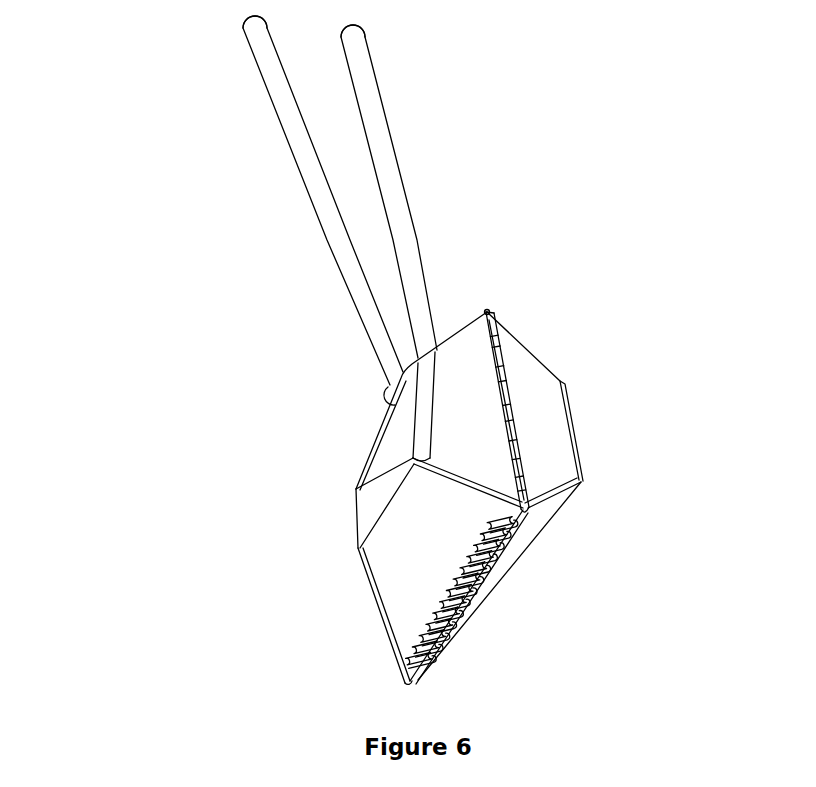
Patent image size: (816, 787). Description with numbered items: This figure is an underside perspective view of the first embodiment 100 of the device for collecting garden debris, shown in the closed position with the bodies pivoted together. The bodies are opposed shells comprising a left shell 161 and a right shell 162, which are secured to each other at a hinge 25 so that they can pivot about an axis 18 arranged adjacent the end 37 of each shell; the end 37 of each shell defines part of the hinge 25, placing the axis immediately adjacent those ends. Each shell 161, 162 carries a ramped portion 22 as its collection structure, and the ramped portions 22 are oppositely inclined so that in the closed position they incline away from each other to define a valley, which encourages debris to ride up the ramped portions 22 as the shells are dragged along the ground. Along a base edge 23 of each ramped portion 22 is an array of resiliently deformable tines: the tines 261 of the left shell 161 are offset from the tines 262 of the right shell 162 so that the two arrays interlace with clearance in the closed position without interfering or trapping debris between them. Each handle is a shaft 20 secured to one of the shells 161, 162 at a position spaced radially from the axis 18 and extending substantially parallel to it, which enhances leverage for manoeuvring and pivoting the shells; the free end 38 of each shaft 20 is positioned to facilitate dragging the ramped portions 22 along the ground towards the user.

The first embodiment 100 is at (152, 294).
The shaft 20 is at (313, 190).
The free end 38 is at (253, 43).
The axis 18 is at (489, 311).
The end 37 is at (483, 335).
The hinge 25 is at (507, 376).
The left shell 161 is at (543, 430).
The right shell 162 is at (390, 476).
The base edge 23 is at (518, 520).
The ramped portion 22 is at (427, 557).
The tines of the left body 261 is at (477, 585).
The tines of the right body 262 is at (437, 602).